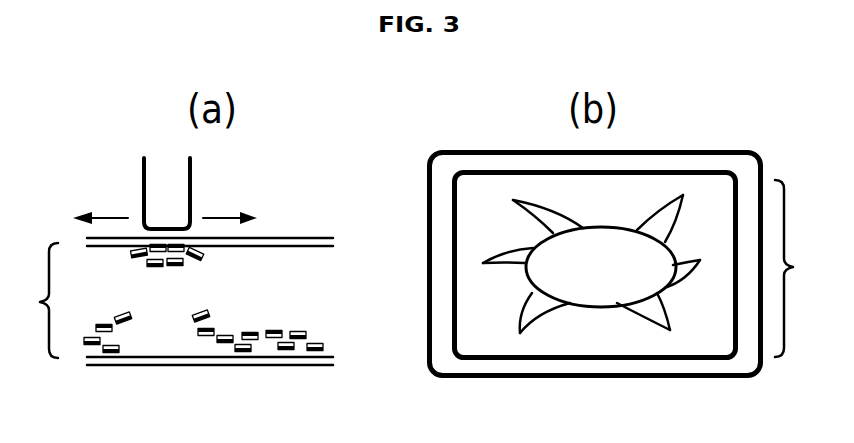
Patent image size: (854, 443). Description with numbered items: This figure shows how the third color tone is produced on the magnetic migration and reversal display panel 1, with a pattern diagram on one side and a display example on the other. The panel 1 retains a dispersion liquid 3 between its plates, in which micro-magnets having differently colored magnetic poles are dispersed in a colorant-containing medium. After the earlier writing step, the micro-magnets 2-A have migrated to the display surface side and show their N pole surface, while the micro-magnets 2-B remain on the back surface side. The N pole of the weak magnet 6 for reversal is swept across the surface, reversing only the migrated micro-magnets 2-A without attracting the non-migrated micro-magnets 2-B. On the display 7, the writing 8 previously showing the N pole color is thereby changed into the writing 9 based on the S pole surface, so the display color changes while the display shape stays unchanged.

The panel 1 is at (413, 269).
The micro-magnets that had migrated to the display surface side 2-A is at (167, 268).
The micro-magnets that had not migrated to the display surface side 2-B is at (277, 332).
The dispersion liquid 3 is at (302, 278).
The magnet for reversal 6 is at (200, 198).
The display 7 is at (657, 193).
The writing 8 is at (525, 300).
The writing based on the S pole surface 9 is at (587, 280).